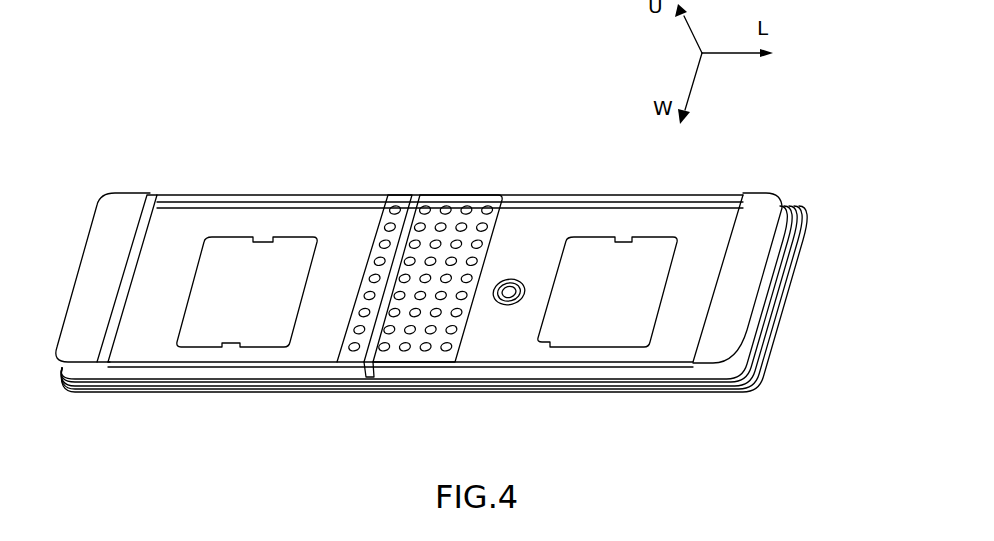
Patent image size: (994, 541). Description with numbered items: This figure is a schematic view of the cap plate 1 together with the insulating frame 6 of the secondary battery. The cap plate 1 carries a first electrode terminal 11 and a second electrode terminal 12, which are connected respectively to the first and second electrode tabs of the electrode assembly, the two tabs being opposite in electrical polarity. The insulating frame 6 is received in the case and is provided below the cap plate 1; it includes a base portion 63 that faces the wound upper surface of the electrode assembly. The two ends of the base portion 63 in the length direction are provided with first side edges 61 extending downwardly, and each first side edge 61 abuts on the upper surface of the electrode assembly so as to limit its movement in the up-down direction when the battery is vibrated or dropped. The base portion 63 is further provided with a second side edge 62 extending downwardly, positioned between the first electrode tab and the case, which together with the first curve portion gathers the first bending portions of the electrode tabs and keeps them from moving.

The cap plate 1 is at (720, 390).
The insulating frame 6 is at (105, 132).
The first side edge 61 is at (100, 278).
The second side edge 62 is at (212, 195).
The base portion 63 is at (307, 212).
The first electrode terminal 11 is at (677, 258).
The second electrode terminal 12 is at (222, 283).